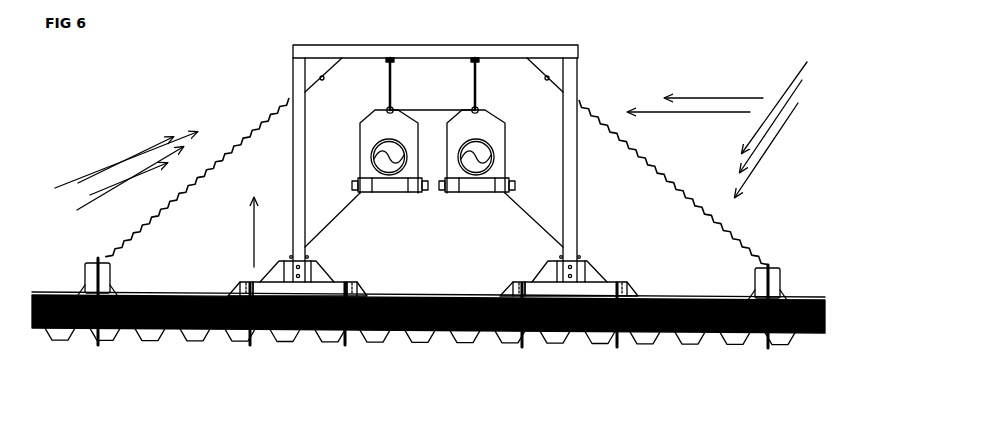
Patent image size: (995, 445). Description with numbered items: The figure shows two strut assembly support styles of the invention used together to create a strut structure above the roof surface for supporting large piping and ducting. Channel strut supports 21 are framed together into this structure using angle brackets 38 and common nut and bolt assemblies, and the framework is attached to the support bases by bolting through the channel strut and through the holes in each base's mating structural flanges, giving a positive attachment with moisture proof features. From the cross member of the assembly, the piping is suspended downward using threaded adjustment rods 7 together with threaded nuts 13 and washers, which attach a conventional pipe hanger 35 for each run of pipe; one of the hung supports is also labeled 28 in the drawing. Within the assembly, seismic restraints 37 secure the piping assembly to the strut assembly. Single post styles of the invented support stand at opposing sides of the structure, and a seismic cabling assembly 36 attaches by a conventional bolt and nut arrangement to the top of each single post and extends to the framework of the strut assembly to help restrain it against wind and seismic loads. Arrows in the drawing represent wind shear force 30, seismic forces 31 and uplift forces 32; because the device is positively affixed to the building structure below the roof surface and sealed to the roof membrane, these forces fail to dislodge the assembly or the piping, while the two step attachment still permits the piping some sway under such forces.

The channel strut support 21 is at (318, 53).
The angle bracket 38 is at (553, 70).
The adjustment rod 7 is at (471, 79).
The threaded nut 13 is at (380, 62).
The left container 28 is at (370, 157).
The pipe hanger 35 is at (505, 140).
The seismic restraint 37 is at (536, 223).
The wind shear force 30 is at (118, 143).
The seismic forces 31 is at (813, 92).
The uplift forces 32 is at (247, 239).
The seismic cabling assembly 36 is at (683, 203).